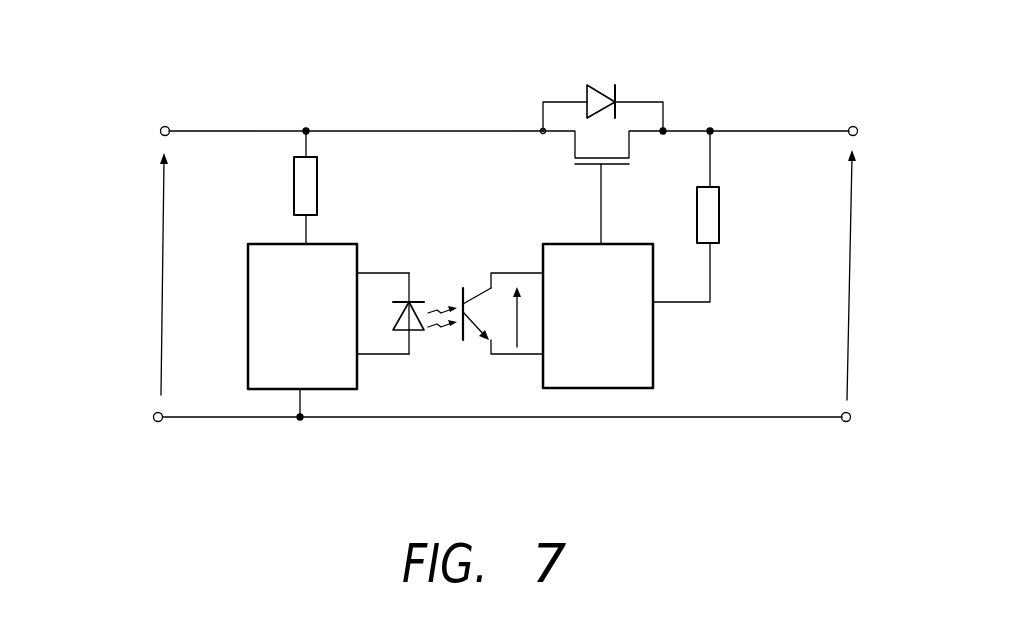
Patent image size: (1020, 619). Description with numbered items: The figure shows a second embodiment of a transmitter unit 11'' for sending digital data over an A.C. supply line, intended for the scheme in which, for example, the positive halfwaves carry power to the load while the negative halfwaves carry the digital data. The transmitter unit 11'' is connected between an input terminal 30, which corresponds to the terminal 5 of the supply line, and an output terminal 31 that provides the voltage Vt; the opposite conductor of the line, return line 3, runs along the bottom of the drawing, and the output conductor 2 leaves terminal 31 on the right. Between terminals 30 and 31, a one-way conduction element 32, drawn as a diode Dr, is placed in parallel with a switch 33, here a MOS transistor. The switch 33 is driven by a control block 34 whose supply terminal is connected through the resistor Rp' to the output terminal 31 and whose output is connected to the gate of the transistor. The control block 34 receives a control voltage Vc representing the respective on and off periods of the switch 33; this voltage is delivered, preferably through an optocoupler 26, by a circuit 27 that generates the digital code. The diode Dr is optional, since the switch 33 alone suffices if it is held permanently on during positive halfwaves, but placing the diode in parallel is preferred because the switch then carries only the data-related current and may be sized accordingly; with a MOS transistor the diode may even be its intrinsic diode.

The transmitter unit 11'' is at (506, 237).
The terminal 5 is at (169, 126).
The input terminal 30 is at (307, 128).
The circuit of generation of the digital code 27 is at (337, 244).
The optocoupler 26 is at (447, 270).
The switch 33 is at (563, 160).
The one-way conduction element 32 is at (602, 77).
The output line 2 is at (775, 130).
The output terminal 31 is at (852, 126).
The control block 34 is at (643, 361).
The return line 3 is at (498, 418).